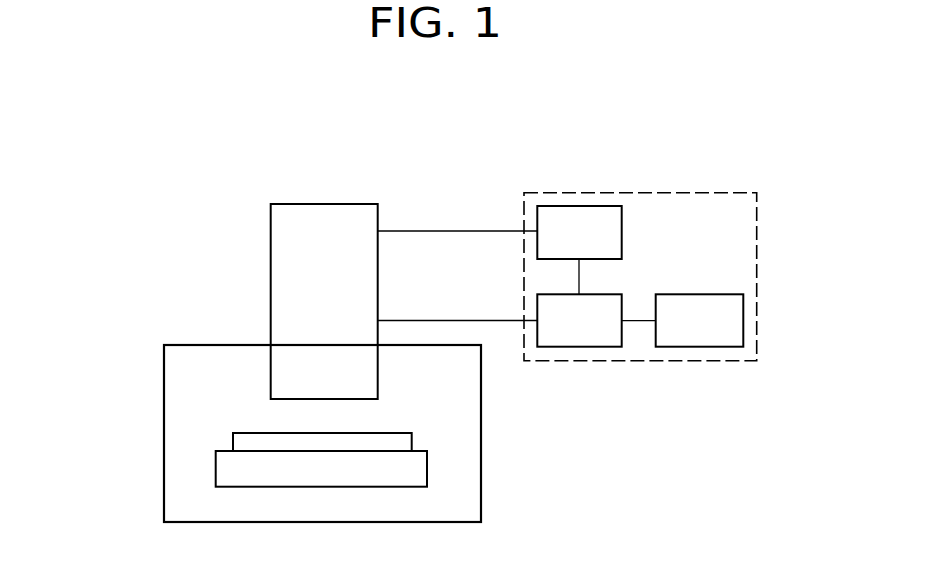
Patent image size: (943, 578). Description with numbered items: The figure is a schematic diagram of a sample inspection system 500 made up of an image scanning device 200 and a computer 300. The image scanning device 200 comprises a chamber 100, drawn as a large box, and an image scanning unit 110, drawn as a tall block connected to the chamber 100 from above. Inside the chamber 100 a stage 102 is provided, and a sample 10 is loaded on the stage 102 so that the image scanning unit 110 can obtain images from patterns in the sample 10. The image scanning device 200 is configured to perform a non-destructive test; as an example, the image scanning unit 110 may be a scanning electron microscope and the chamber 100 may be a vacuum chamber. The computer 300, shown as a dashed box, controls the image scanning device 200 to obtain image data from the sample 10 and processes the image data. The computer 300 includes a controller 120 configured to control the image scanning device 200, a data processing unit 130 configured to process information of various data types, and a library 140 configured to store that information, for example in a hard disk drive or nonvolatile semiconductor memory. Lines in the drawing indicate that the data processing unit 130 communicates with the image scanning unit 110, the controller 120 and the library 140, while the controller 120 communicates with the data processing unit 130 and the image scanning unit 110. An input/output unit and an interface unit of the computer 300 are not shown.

The image scanning device 200 is at (87, 277).
The image scanning unit 110 is at (271, 287).
The chamber 100 is at (164, 380).
The sample 10 is at (412, 443).
The stage 102 is at (427, 472).
The sample inspection system 500 is at (678, 147).
The computer 300 is at (757, 277).
The controller 120 is at (622, 230).
The data processing unit 130 is at (591, 347).
The library 140 is at (743, 320).